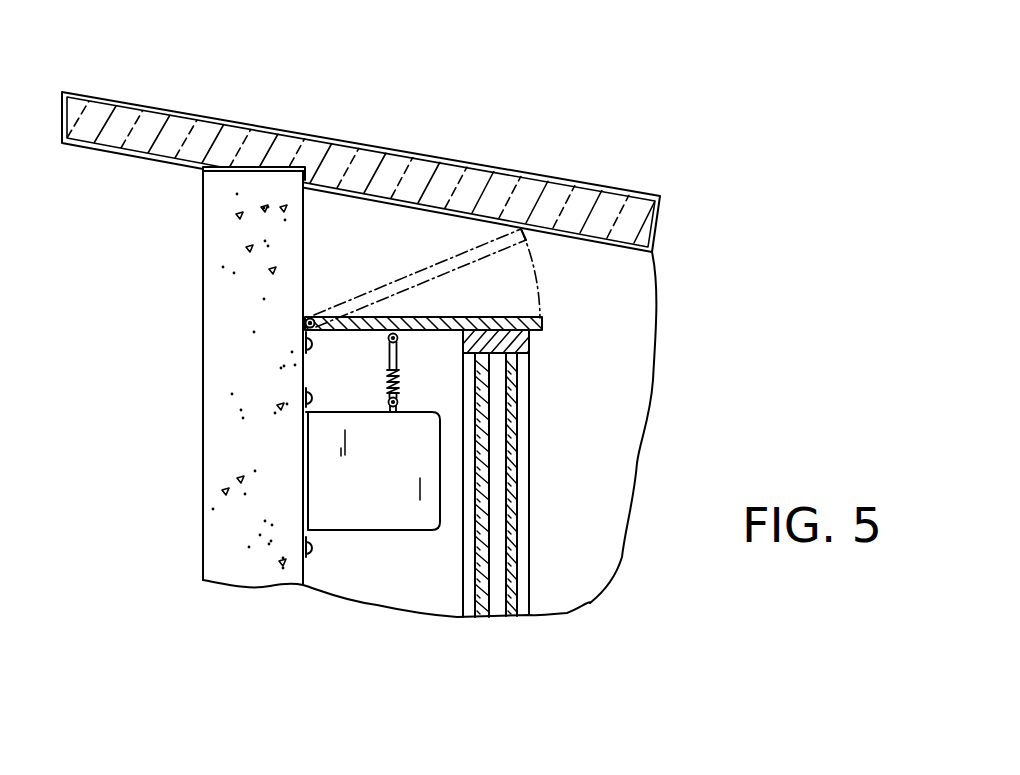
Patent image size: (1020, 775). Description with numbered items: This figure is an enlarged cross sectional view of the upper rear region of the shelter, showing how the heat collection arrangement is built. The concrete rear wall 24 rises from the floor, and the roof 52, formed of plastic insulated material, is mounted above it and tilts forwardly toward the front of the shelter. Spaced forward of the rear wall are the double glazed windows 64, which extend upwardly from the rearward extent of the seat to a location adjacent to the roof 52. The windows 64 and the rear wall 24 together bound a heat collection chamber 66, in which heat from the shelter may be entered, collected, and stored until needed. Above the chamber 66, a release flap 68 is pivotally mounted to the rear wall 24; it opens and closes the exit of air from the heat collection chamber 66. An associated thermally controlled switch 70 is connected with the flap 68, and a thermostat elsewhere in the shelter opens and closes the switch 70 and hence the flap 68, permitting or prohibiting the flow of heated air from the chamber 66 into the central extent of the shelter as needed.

The roof 52 is at (193, 138).
The concrete rear wall 24 is at (233, 475).
The release flap 68 is at (452, 317).
The thermally controlled switch 70 is at (415, 465).
The double glazed windows 64 is at (518, 583).
The heat collection chamber 66 is at (420, 563).